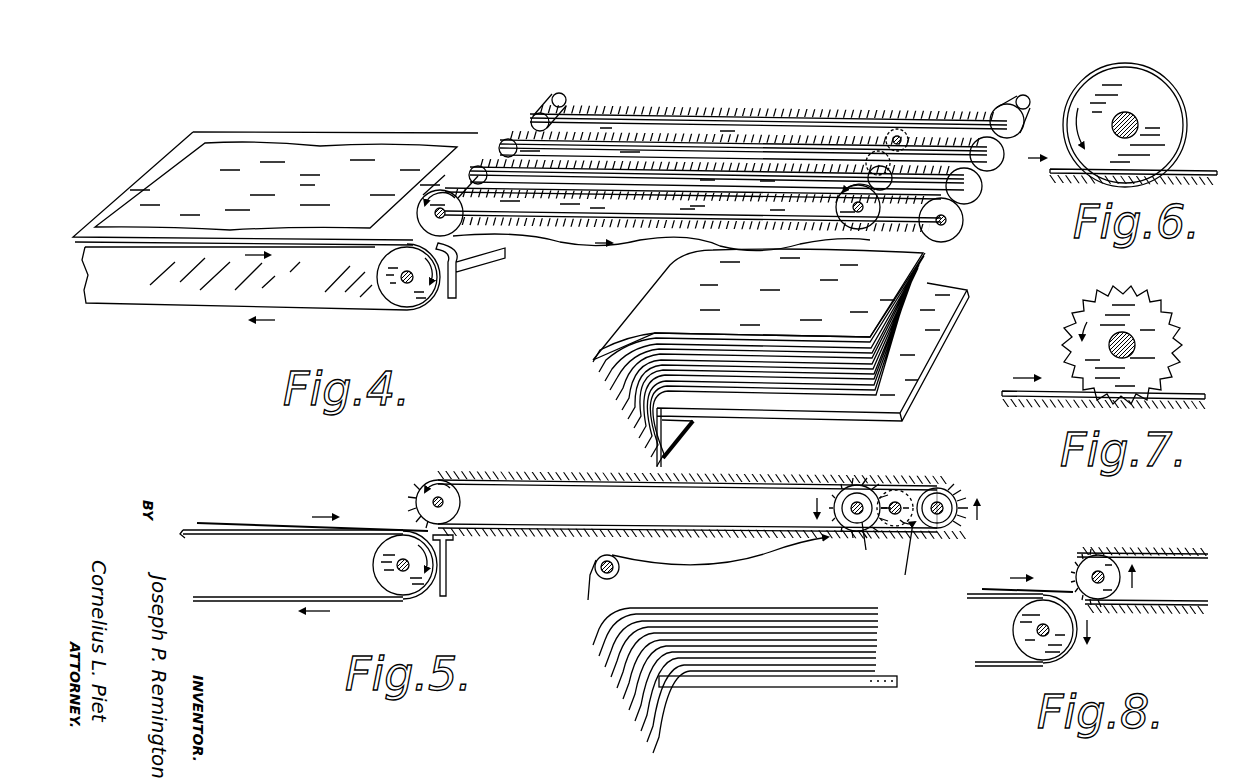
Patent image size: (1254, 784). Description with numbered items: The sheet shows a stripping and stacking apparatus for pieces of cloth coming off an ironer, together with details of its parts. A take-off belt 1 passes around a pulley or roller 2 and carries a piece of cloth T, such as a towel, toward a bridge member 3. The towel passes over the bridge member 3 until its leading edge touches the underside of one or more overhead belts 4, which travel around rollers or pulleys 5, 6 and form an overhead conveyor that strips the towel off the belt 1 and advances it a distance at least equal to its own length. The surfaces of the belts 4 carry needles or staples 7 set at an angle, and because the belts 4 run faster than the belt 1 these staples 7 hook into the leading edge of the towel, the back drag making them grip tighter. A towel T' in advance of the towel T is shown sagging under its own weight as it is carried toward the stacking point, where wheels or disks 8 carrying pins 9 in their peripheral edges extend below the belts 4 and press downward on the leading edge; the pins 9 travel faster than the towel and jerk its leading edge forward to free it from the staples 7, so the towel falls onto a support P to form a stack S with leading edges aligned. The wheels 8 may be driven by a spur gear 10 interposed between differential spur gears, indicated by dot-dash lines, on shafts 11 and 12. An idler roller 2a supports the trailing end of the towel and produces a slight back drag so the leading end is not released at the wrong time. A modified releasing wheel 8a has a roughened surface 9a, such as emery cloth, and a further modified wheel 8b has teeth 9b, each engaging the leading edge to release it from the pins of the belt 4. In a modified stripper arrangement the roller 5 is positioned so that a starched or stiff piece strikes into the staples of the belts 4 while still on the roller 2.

In FIG. 4, the belt 1 is at (306, 298).
In FIG. 5, the belt 1 is at (250, 593).
In FIG. 8, the belt 1 is at (992, 665).
In FIG. 4, the pulley or roller 2 is at (418, 300).
In FIG. 5, the pulley or roller 2 is at (410, 598).
In FIG. 8, the pulley or roller 2 is at (1020, 628).
In FIG. 5, the idler roller 2a is at (619, 576).
In FIG. 4, the bridge member 3 is at (480, 262).
In FIG. 5, the bridge member 3 is at (448, 583).
In FIG. 4, the belts 4 is at (656, 218).
In FIG. 5, the belts 4 is at (536, 530).
In FIG. 6, the belts 4 is at (1200, 170).
In FIG. 7, the belts 4 is at (1186, 391).
In FIG. 8, the belts 4 is at (1152, 604).
In FIG. 4, the roller or pulley 5 is at (553, 96).
In FIG. 5, the roller or pulley 5 is at (462, 501).
In FIG. 8, the roller or pulley 5 is at (1097, 555).
In FIG. 4, the roller or pulley 6 is at (1017, 100).
In FIG. 5, the roller or pulley 6 is at (940, 535).
In FIG. 4, the needles or staples 7 is at (800, 108).
In FIG. 5, the needles or staples 7 is at (542, 478).
In FIG. 8, the needles or staples 7 is at (1140, 548).
In FIG. 4, the wheels or disks 8 is at (866, 229).
In FIG. 5, the wheels or disks 8 is at (850, 486).
In FIG. 6, the releasing wheel 8a is at (1172, 110).
In FIG. 7, the wheel 8b is at (1173, 325).
In FIG. 4, the pins 9 is at (910, 126).
In FIG. 5, the pins 9 is at (880, 480).
In FIG. 6, the roughened surface 9a is at (1150, 74).
In FIG. 7, the teeth 9b is at (1145, 290).
In FIG. 5, the spur gear 10 is at (904, 558).
In FIG. 5, the shaft 11 is at (945, 492).
In FIG. 5, the shaft 12 is at (872, 546).
In FIG. 4, the piece of cloth T is at (276, 186).
In FIG. 5, the piece of cloth T is at (312, 513).
In FIG. 8, the piece of cloth T is at (1027, 564).
In FIG. 4, the towel T' is at (661, 242).
In FIG. 5, the towel T' is at (720, 565).
In FIG. 4, the stack S is at (759, 357).
In FIG. 5, the stack S is at (757, 656).
In FIG. 4, the support P is at (960, 318).
In FIG. 5, the support P is at (840, 684).